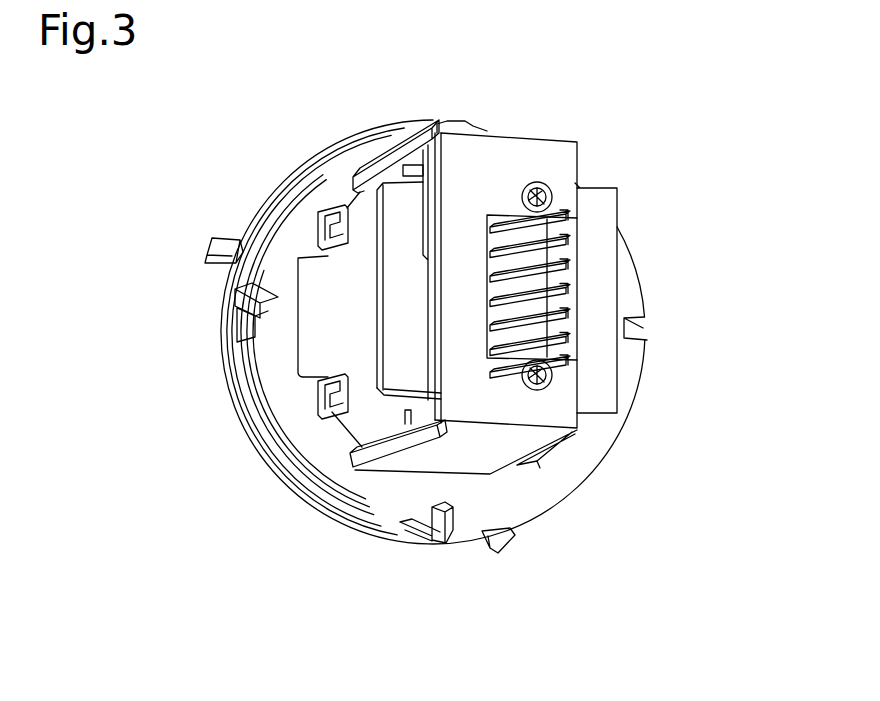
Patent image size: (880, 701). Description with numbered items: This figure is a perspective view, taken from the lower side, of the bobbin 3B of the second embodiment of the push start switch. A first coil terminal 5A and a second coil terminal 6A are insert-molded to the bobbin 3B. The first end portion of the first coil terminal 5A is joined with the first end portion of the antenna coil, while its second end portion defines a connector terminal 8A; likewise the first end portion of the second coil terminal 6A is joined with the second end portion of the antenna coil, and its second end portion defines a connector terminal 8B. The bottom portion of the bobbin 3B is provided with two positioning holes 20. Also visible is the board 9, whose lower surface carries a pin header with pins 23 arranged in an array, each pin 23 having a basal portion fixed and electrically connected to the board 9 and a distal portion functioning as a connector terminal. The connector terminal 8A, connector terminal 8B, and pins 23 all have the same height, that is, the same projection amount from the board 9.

The bobbin 3B is at (640, 394).
The first coil terminal 5A is at (397, 142).
The second coil terminal 6A is at (433, 445).
The positioning holes 20 is at (522, 189).
The board 9 is at (618, 202).
The pins 23 is at (566, 238).
The connector terminal 8A is at (500, 343).
The connector terminal 8B is at (500, 362).